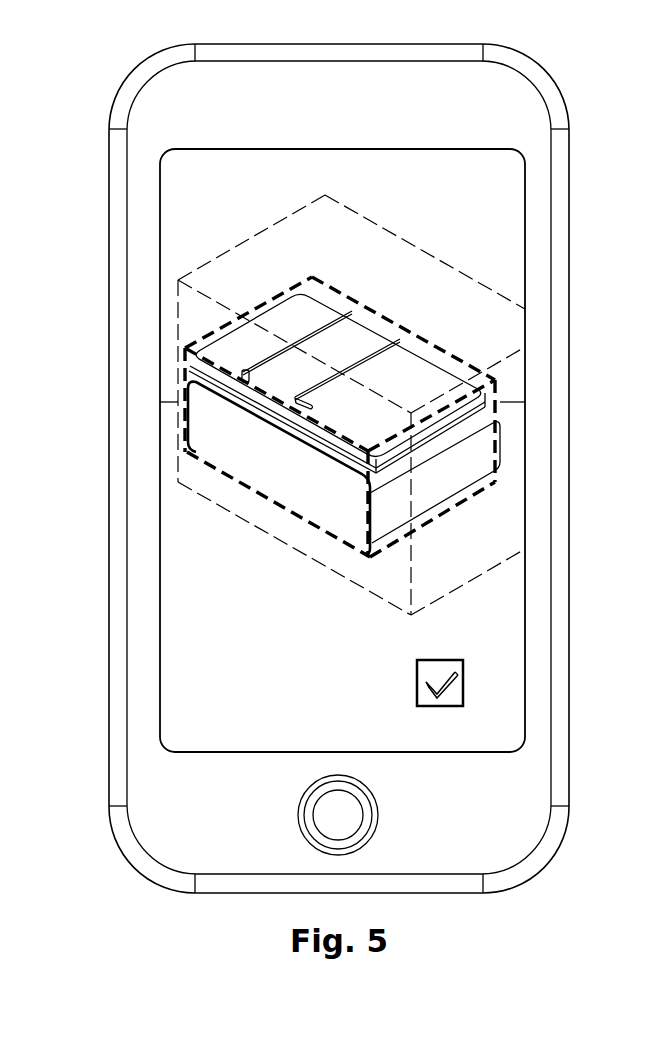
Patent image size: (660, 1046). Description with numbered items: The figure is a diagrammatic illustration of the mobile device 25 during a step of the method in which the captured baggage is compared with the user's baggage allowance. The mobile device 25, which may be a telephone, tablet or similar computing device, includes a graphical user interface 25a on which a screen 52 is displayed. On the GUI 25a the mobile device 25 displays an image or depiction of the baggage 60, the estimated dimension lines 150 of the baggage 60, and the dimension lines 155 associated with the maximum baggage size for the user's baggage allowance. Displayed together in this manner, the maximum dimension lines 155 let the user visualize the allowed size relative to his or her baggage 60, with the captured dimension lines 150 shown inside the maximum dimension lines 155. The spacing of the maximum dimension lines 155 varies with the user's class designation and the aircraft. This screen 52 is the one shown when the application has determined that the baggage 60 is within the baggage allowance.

The mobile device 25 is at (114, 86).
The graphical user interface 25a is at (345, 148).
The screen 52 is at (234, 204).
The baggage 60 is at (418, 367).
The estimated dimension lines 150 is at (347, 296).
The maximum dimension lines 155 is at (427, 254).